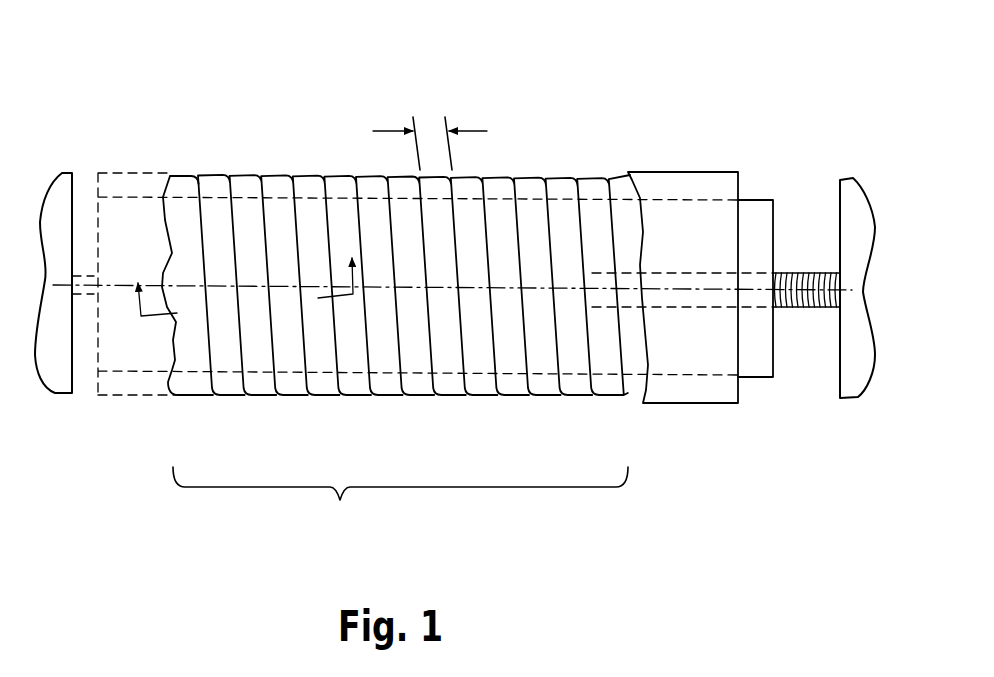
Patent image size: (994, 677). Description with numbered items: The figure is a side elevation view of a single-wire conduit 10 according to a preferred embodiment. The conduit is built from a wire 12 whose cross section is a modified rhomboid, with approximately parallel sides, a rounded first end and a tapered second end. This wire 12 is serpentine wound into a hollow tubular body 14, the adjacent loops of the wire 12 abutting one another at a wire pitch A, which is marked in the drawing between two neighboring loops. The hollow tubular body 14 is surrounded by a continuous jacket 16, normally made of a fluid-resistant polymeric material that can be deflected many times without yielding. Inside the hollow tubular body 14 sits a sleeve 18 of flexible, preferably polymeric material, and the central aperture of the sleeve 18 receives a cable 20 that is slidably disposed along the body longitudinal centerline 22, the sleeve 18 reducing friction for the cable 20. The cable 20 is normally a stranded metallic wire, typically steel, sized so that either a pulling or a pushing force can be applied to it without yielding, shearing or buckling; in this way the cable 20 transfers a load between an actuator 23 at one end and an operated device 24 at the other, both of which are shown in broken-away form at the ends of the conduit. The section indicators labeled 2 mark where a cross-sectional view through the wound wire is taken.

The single-wire conduit 10 is at (300, 145).
The wire 12 is at (513, 382).
The hollow tubular body 14 is at (400, 498).
The continuous jacket 16 is at (680, 383).
The sleeve 18 is at (759, 358).
The cable 20 is at (818, 310).
The body longitudinal centerline 22 is at (677, 289).
The actuator 23 is at (847, 207).
The operated device 24 is at (62, 190).
The section line 2- 2 is at (241, 275).
The wire pitch A is at (434, 139).